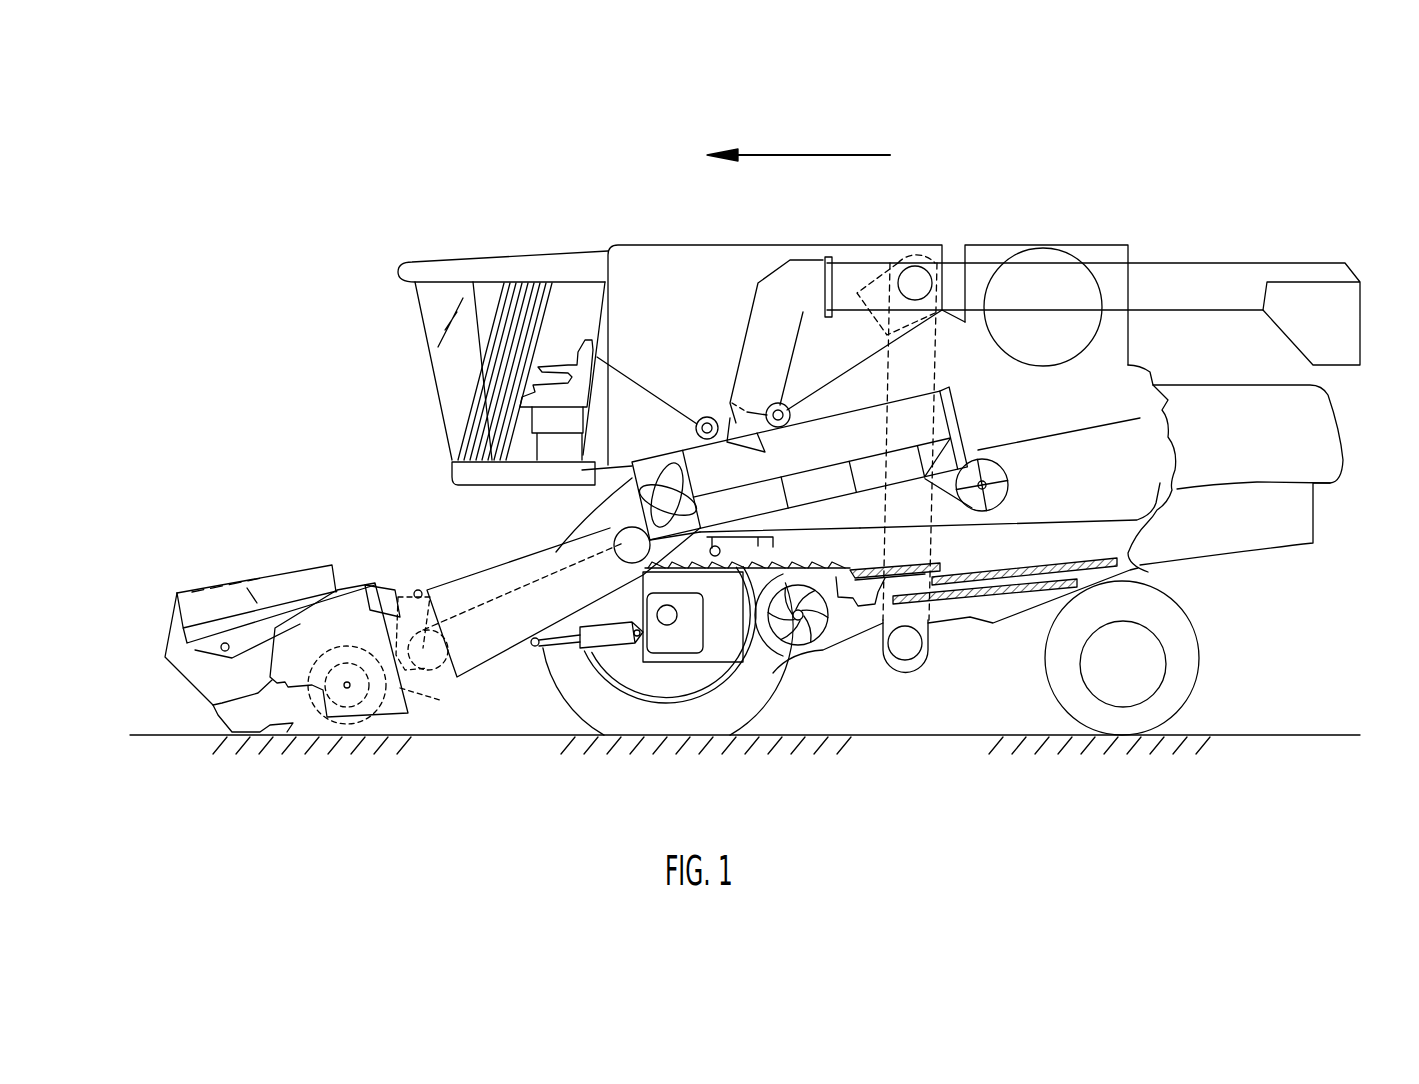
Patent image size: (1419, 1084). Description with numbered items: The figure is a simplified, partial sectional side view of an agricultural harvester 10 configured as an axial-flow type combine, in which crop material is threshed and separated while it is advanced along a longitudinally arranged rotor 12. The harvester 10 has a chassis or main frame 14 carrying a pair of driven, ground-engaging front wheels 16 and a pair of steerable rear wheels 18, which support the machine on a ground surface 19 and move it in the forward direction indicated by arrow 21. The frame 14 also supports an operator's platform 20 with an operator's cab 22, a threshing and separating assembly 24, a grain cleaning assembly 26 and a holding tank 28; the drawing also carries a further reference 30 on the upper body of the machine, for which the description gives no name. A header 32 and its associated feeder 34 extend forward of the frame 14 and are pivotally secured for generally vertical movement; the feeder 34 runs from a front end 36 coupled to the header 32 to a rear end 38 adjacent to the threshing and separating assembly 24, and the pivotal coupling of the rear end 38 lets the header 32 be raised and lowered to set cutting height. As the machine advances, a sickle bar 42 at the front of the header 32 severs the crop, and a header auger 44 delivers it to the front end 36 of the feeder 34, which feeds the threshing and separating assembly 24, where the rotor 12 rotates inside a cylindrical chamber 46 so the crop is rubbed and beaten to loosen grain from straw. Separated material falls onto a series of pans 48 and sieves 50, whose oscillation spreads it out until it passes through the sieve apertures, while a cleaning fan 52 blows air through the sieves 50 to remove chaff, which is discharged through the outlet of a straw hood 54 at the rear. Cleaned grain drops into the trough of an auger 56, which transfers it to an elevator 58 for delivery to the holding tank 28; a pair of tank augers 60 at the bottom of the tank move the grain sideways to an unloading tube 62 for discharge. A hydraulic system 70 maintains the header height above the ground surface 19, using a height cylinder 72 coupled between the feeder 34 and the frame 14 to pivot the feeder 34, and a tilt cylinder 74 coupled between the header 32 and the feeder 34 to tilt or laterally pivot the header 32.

The agricultural harvester 10 is at (456, 208).
The rotor 12 is at (662, 477).
The main frame 14 is at (1153, 570).
The front wheels 16 is at (603, 702).
The rear wheels 18 is at (1195, 672).
The ground surface 19 is at (155, 734).
The operator's platform 20 is at (468, 474).
The arrow indicating forward direction of movement 21 is at (820, 155).
The operator's cab 22 is at (440, 367).
The threshing and separating assembly 24 is at (788, 459).
The grain cleaning assembly 26 is at (870, 670).
The holding tank 28 is at (705, 245).
The grain tank 30 is at (1020, 248).
The header 32 is at (217, 566).
The feeder 34 is at (434, 556).
The front end of the feeder 36 is at (345, 628).
The rear end of the feeder 38 is at (612, 514).
The sickle bar 42 is at (233, 730).
The header auger 44 is at (363, 717).
The cylindrical chamber 46 is at (845, 418).
The pans 48 is at (805, 553).
The sieves 50 is at (938, 562).
The cleaning fan 52 is at (792, 647).
The straw hood 54 is at (1332, 452).
The auger 56 is at (903, 655).
The elevator 58 is at (937, 335).
The tank augers 60 is at (702, 416).
The unloading tube 62 is at (1188, 278).
The hydraulic system 70 is at (458, 692).
The height cylinder 72 is at (568, 640).
The tilt cylinder 74 is at (430, 700).